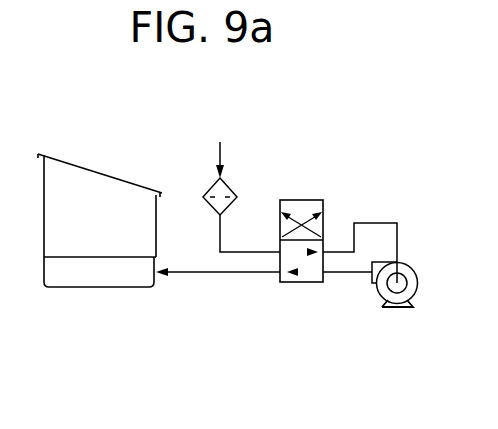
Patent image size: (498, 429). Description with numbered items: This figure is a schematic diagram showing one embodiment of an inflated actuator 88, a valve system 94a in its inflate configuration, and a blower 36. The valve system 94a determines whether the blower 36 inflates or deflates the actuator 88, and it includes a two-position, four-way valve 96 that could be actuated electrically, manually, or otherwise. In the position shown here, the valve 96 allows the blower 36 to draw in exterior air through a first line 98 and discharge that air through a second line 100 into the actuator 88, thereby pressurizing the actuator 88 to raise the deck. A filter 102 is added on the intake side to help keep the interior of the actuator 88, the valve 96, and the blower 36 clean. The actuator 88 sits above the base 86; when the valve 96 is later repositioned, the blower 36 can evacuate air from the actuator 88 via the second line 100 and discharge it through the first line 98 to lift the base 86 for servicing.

The actuator 88 is at (123, 177).
The base 86 is at (105, 290).
The filter 102 is at (210, 186).
The first line 98 is at (223, 152).
The 2-position, 4-way valve 96 is at (301, 200).
The second line 100 is at (230, 274).
The valve system 94a is at (352, 164).
The blower 36 is at (420, 273).